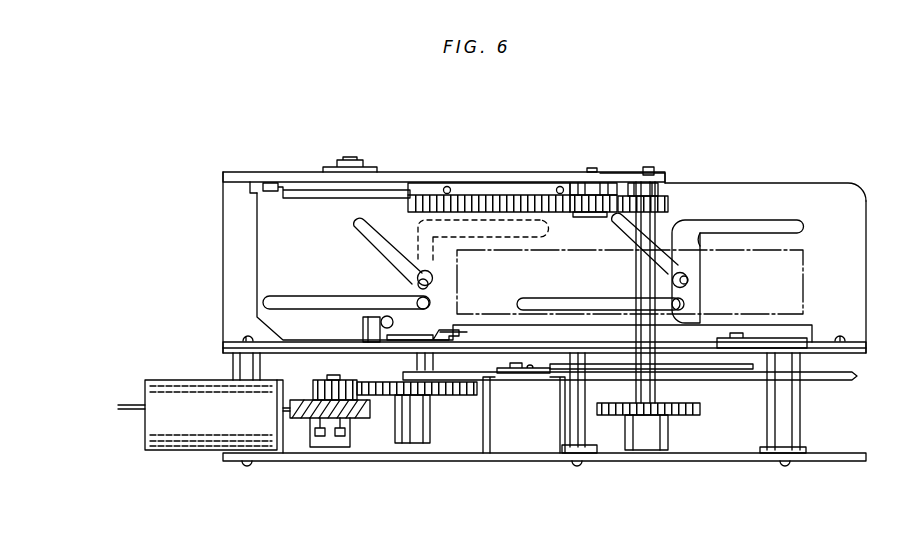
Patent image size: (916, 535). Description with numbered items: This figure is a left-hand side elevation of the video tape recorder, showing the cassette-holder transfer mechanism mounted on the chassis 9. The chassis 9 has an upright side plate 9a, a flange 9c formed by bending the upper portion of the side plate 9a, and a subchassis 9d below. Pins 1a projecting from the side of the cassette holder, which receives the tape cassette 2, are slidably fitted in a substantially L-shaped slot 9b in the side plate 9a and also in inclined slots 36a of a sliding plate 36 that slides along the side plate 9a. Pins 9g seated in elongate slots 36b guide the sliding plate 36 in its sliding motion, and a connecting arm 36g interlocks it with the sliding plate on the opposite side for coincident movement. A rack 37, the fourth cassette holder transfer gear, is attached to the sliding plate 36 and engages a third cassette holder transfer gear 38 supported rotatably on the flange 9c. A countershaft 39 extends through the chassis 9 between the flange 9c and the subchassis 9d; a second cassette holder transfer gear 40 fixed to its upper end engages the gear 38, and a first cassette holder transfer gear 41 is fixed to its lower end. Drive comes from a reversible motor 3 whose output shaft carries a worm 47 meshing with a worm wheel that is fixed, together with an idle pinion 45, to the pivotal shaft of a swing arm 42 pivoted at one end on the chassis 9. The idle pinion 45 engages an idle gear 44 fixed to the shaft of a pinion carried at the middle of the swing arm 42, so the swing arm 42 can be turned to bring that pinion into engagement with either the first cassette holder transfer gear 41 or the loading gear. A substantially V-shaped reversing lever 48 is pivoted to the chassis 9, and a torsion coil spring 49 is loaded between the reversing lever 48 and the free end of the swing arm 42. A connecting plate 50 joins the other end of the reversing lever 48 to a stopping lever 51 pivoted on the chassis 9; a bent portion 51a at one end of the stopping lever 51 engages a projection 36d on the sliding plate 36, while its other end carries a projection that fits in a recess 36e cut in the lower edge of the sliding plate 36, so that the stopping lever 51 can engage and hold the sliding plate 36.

The pins 1a is at (418, 271).
The tape cassette 2 is at (800, 285).
The reversible motor 3 is at (193, 452).
The chassis 9 is at (866, 350).
The side plate 9a is at (728, 190).
The L-shaped slot 9b is at (770, 228).
The flange 9c is at (434, 182).
The subchassis 9d is at (705, 462).
The guide pin 9g is at (430, 303).
The sliding plate 36 is at (265, 247).
The inclined slot 36a is at (363, 238).
The elongate slot 36b is at (290, 296).
The projection 36d is at (393, 322).
The recess 36e is at (598, 330).
The connecting arm 36g is at (330, 167).
The rack 37 is at (500, 200).
The third cassette holder transfer gear 38 is at (583, 195).
The countershaft 39 is at (660, 390).
The second cassette holder transfer gear 40 is at (670, 208).
The first cassette holder transfer gear 41 is at (702, 412).
The swing arm 42 is at (440, 462).
The idle gear 44 is at (468, 396).
The idle pinion 45 is at (312, 400).
The bracket 47 is at (352, 420).
The reversing lever 48 is at (827, 383).
The torsion coil spring 49 is at (522, 373).
The connecting plate 50 is at (852, 378).
The stopping lever 51 is at (470, 335).
The bent portion 51a is at (363, 325).